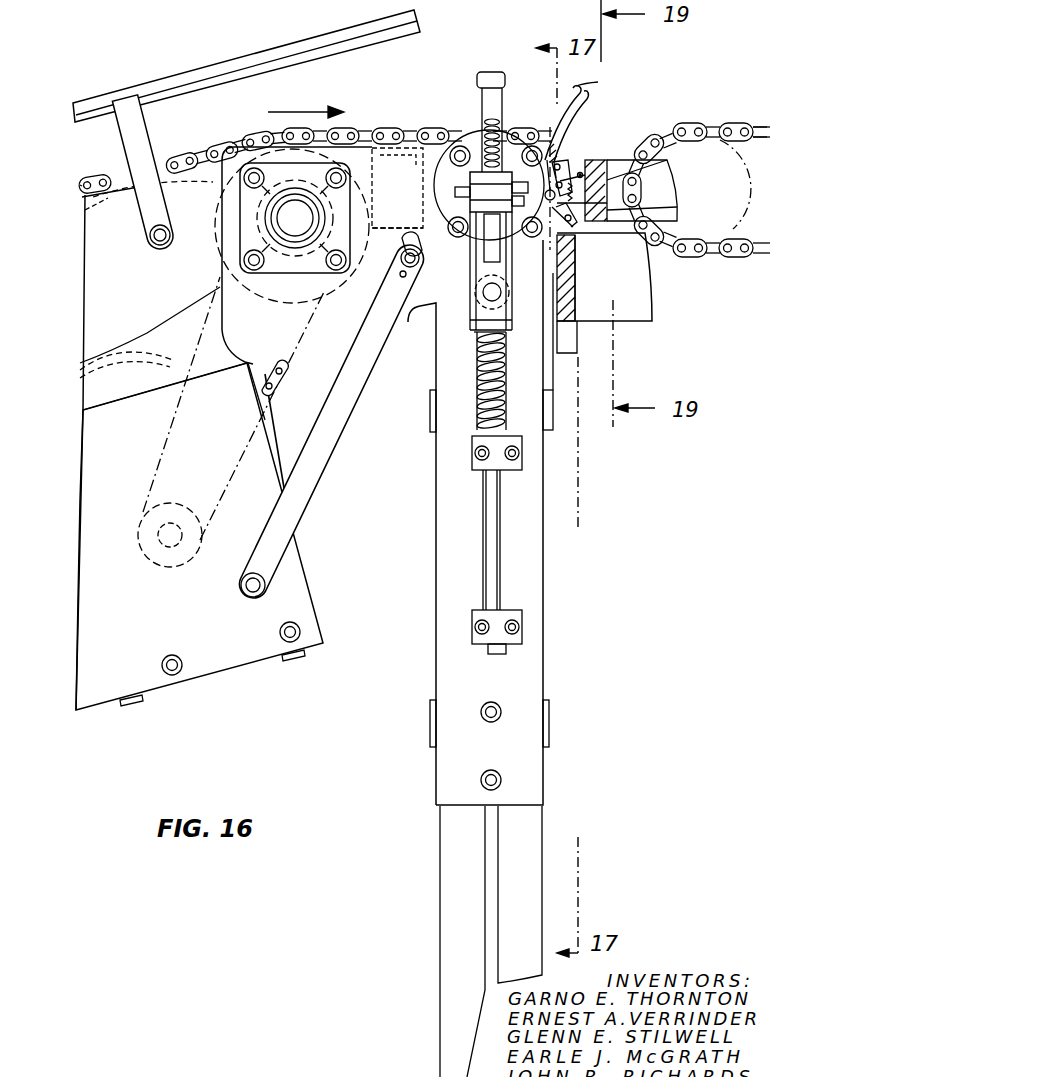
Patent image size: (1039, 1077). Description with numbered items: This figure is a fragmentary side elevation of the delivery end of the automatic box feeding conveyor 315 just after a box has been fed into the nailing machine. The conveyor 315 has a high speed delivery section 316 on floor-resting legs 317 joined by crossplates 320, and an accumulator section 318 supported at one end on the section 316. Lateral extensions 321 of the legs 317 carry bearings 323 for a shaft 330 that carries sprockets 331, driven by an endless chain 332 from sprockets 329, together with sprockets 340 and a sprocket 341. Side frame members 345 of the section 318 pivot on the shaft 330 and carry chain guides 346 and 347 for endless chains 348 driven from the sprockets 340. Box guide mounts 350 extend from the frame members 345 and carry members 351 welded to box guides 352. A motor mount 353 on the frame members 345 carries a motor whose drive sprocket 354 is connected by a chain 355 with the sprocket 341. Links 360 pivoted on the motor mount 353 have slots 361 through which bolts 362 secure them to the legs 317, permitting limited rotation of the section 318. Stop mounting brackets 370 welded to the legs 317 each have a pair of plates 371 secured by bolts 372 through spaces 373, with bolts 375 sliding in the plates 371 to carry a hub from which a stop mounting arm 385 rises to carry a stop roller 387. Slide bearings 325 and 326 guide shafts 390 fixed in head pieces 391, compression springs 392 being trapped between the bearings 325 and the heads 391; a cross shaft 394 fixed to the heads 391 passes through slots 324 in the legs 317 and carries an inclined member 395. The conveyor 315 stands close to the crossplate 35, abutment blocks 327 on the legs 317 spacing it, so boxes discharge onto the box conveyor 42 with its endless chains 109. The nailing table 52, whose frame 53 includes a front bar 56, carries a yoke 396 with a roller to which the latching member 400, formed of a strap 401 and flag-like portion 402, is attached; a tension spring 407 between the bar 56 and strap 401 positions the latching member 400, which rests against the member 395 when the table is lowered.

The automatic box feeding conveyor 315 is at (112, 78).
The box guides 352 is at (258, 57).
The members 351 is at (140, 128).
The endless chains 348 is at (105, 178).
The chain guide 346 is at (95, 218).
The accumulator section 318 is at (98, 265).
The box guide mounts 350 is at (151, 246).
The side frame members 345 is at (100, 309).
The sprockets 340 is at (265, 204).
The shaft 330 is at (306, 226).
The sprocket 341 is at (239, 290).
The chain guide 347 is at (80, 400).
The bearings 323 is at (336, 198).
The bolts 372 is at (458, 189).
The spaces 373 is at (488, 190).
The bolts 375 is at (470, 200).
The sprockets 331 is at (374, 230).
The bolts 362 is at (428, 262).
The slots 361 is at (462, 298).
The stop mounting brackets 370 is at (330, 335).
The head pieces 391 is at (478, 318).
The compression springs 392 is at (474, 360).
The cross shaft 394 is at (505, 283).
The slots 324 is at (504, 335).
The crossplates 320 is at (430, 412).
The links 360 is at (330, 462).
The slide bearing 325 is at (475, 468).
The shafts 390 is at (497, 527).
The slide bearing 326 is at (475, 617).
The motor mount 353 is at (312, 586).
The drive sprocket 354 is at (182, 515).
The endless chain 355 is at (292, 383).
The lateral extensions 321 is at (292, 392).
The legs 317 is at (455, 688).
The stop roller 387 is at (500, 61).
The stop mounting arm 385 is at (500, 100).
The sprockets 329 is at (480, 122).
The endless chain 332 is at (411, 131).
The high speed delivery conveyor section 316 is at (381, 112).
The member 395 is at (550, 136).
The flag-like portion 402 is at (599, 82).
The latching member 400 is at (580, 118).
The yoke 396 is at (570, 167).
The rigid metal strap 401 is at (578, 222).
The horizontal plate 35 is at (576, 277).
The rectangular frame 53 is at (636, 331).
The plates 371 is at (576, 299).
The abutment blocks 327 is at (557, 327).
The tension spring 407 is at (672, 206).
The front and rear bars 56 is at (667, 170).
The nailing table 52 is at (640, 142).
The box conveyor 42 is at (690, 122).
The endless chains 109 is at (740, 128).